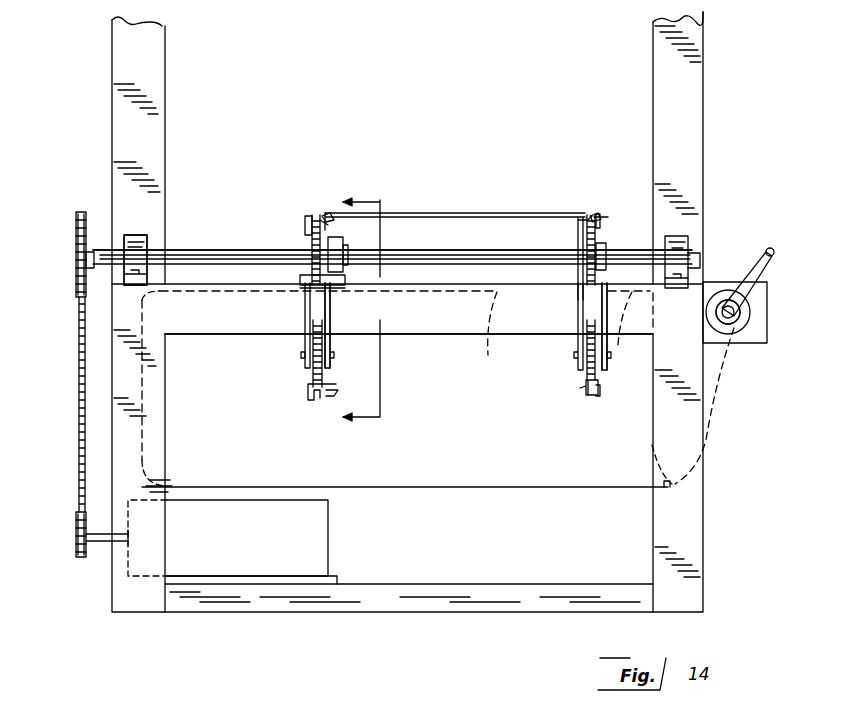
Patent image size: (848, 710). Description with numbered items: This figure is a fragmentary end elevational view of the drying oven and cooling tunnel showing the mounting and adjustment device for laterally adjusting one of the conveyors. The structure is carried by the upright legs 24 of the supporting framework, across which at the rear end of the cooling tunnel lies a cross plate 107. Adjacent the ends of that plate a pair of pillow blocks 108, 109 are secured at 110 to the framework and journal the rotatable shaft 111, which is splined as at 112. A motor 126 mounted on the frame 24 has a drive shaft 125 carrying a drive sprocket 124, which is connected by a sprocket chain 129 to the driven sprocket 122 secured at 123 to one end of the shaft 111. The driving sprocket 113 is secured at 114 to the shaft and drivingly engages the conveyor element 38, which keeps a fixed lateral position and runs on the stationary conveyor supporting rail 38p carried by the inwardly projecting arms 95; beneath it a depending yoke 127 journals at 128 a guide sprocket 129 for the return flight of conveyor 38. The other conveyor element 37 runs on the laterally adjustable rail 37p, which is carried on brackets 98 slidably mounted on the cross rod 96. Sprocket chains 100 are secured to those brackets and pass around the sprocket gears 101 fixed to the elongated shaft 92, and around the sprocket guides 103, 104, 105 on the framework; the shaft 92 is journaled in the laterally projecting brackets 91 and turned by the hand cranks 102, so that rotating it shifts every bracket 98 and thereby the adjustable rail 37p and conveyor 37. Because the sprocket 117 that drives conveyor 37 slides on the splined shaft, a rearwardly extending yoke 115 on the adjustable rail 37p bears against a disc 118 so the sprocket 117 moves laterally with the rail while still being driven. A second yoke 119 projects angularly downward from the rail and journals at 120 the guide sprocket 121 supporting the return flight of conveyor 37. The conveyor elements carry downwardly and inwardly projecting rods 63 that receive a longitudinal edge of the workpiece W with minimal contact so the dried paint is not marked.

The upright legs 24 is at (652, 527).
The conveyor element 37 is at (318, 210).
The laterally adjustable rail 37p is at (334, 222).
The conveyor element 38 is at (589, 213).
The stationary conveyor supporting rail 38p is at (588, 228).
The rods 63 is at (584, 389).
The brackets 91 is at (764, 336).
The elongated shaft 92 is at (740, 322).
The inwardly projecting arms 95 is at (612, 347).
The cross rod 96 is at (488, 348).
The brackets 98 is at (302, 315).
The sprocket chains 100 is at (715, 426).
The sprocket gears 101 is at (748, 305).
The hand cranks 102 is at (774, 248).
The sprocket guide 103 is at (656, 452).
The sprocket guide 104 is at (160, 468).
The sprocket guide 105 is at (160, 309).
The cross plate 107 is at (440, 336).
The pillow block 108 is at (678, 236).
The pillow block 109 is at (128, 235).
The securing means 110 is at (152, 262).
The rotatable shaft 111 is at (628, 251).
The spline 112 is at (244, 252).
The driving sprocket 113 is at (602, 214).
The securing means 114 is at (602, 245).
The yoke 115 is at (350, 286).
The sprocket 117 is at (306, 238).
The disc 118 is at (346, 248).
The second yoke 119 is at (304, 356).
The journal 120 is at (331, 345).
The guide sprocket 121 is at (312, 385).
The driven sprocket 122 is at (76, 252).
The securing means 123 is at (86, 264).
The drive sprocket 124 is at (76, 536).
The drive shaft 125 is at (106, 542).
The motor 126 is at (215, 568).
The depending yoke 127 is at (578, 347).
The journal 128 is at (578, 360).
The sprocket chain 129 is at (79, 392).
The workpiece W is at (512, 212).